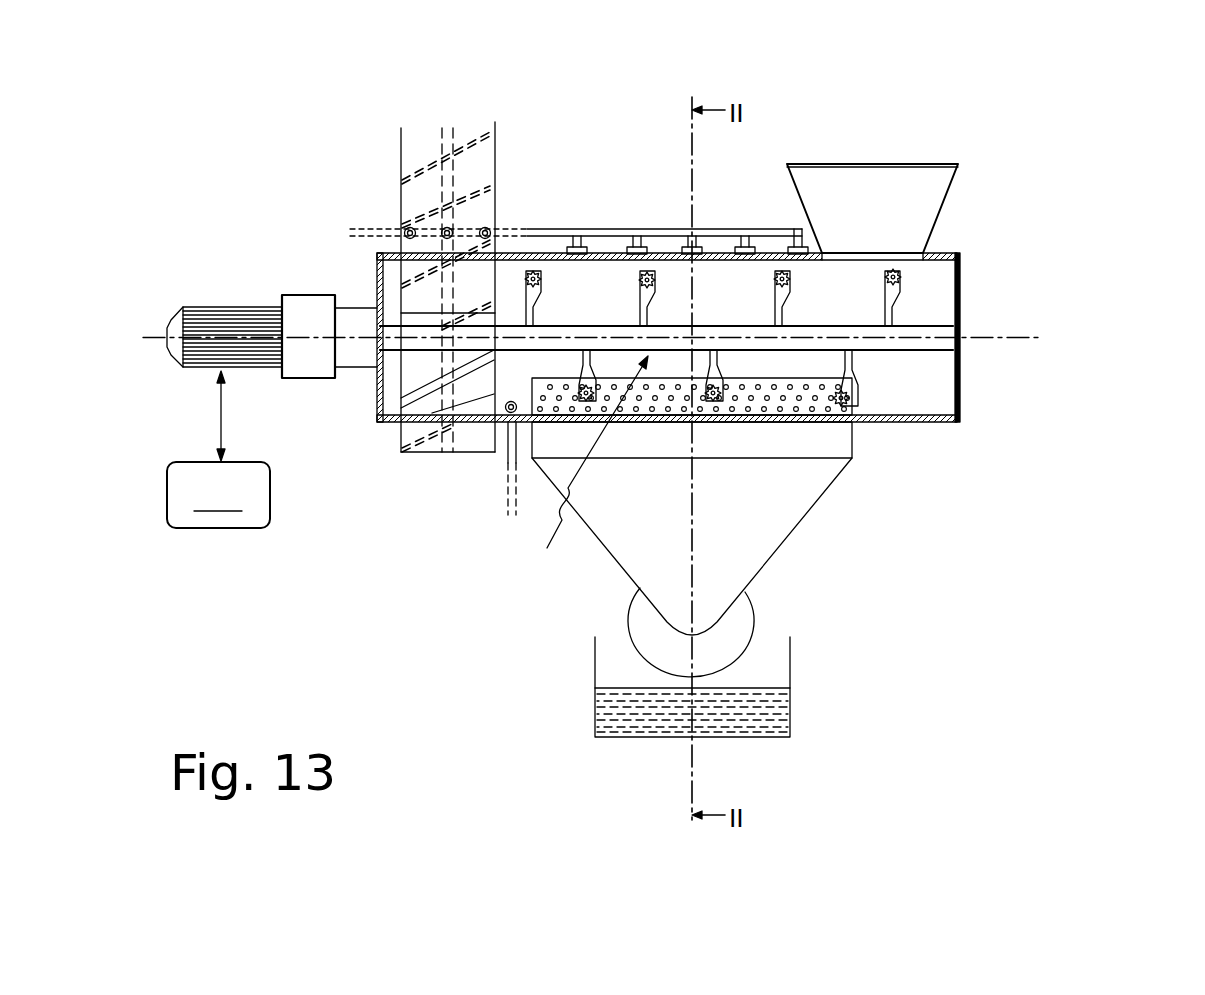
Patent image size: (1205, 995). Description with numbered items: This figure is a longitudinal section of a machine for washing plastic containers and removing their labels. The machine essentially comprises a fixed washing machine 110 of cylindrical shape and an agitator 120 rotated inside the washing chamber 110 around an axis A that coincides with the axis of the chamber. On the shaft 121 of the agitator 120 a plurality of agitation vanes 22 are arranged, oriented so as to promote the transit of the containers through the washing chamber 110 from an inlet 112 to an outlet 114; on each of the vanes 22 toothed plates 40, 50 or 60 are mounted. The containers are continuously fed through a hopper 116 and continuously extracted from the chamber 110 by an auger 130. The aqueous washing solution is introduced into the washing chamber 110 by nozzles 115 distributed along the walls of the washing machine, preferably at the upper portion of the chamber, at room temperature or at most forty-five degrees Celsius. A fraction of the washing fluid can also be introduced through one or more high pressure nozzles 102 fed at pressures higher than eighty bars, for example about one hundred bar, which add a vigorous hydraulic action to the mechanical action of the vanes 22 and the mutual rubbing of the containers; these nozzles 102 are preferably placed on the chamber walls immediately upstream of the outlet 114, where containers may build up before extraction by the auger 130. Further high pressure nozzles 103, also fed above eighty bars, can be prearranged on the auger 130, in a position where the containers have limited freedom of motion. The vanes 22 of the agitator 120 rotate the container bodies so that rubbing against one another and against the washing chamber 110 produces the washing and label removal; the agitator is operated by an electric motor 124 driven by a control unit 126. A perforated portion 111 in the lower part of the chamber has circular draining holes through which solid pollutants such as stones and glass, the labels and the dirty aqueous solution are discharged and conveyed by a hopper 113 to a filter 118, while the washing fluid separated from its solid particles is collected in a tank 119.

The agitation vanes 22 is at (856, 283).
The toothed plates 40 is at (856, 283).
The toothed plates 50 is at (856, 283).
The toothed plates 60 is at (657, 280).
The high pressure nozzles 102 is at (505, 432).
The high pressure nozzles 103 is at (406, 229).
The washing machine 110 is at (961, 384).
The perforated portion 111 is at (754, 417).
The inlet 112 is at (882, 252).
The hopper 113 is at (759, 578).
The outlet 114 is at (415, 362).
The nozzles 115 is at (632, 263).
The hopper 116 is at (882, 205).
The filter 118 is at (637, 610).
The tank 119 is at (790, 650).
The agitator 120 is at (584, 472).
The shaft 121 is at (708, 330).
The electric motor 124 is at (233, 318).
The control unit 126 is at (218, 449).
The auger 130 is at (424, 166).
The axis A is at (1028, 338).